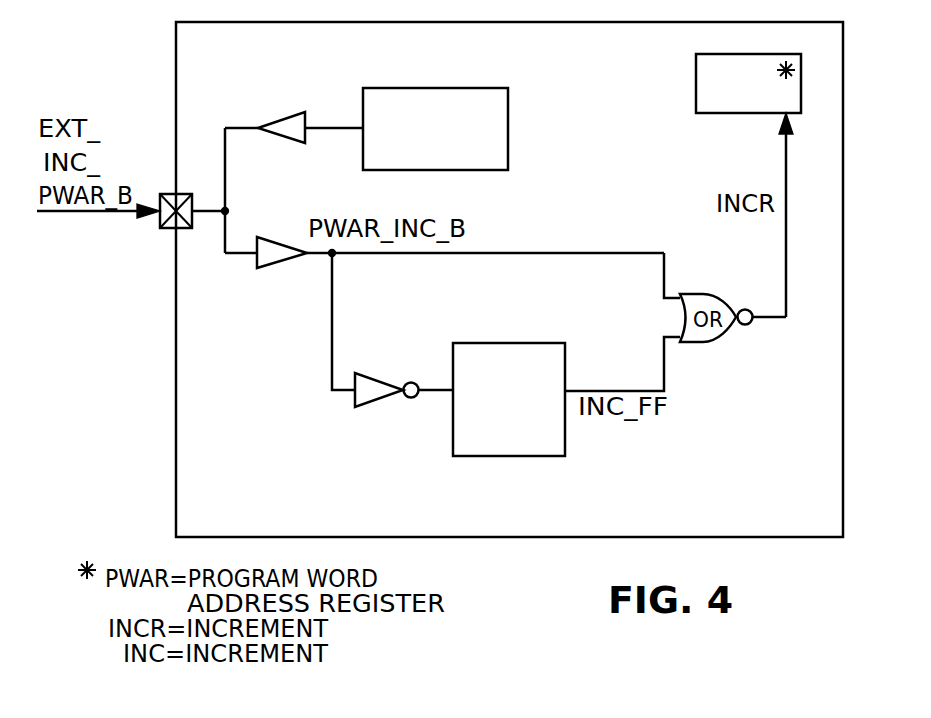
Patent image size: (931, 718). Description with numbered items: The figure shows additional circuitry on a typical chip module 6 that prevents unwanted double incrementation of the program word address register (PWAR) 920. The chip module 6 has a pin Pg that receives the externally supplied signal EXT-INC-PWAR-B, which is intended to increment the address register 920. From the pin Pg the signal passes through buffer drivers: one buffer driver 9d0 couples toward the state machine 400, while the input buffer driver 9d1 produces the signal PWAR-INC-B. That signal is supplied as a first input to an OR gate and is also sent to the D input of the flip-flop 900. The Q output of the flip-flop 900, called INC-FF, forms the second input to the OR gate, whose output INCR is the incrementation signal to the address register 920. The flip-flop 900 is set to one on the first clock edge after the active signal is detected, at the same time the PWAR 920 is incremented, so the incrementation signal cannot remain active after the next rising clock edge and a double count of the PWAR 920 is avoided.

The chip module 6 is at (177, 377).
The pin Pg is at (167, 230).
The output buffer driver 9d0 is at (282, 118).
The input buffer driver 9d1 is at (273, 257).
The state machine 400 is at (505, 155).
The flip-flop 900 is at (545, 456).
The address register (PWAR) 920 is at (697, 92).